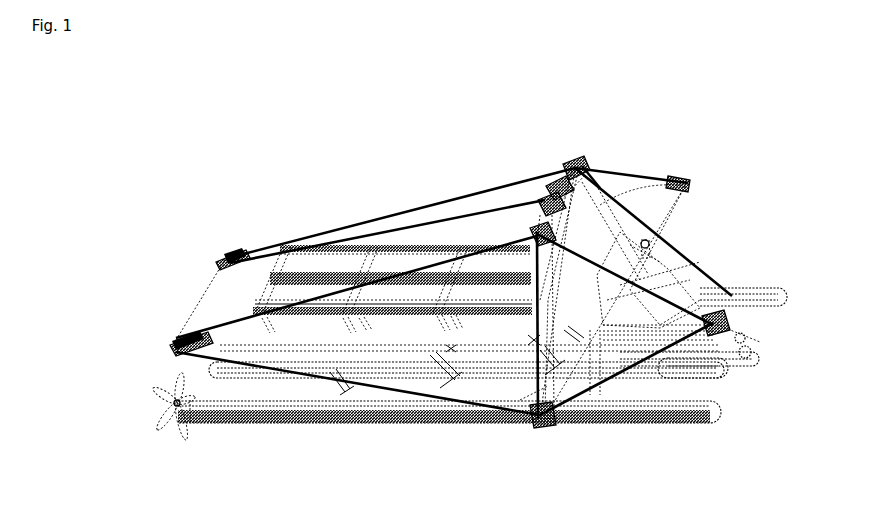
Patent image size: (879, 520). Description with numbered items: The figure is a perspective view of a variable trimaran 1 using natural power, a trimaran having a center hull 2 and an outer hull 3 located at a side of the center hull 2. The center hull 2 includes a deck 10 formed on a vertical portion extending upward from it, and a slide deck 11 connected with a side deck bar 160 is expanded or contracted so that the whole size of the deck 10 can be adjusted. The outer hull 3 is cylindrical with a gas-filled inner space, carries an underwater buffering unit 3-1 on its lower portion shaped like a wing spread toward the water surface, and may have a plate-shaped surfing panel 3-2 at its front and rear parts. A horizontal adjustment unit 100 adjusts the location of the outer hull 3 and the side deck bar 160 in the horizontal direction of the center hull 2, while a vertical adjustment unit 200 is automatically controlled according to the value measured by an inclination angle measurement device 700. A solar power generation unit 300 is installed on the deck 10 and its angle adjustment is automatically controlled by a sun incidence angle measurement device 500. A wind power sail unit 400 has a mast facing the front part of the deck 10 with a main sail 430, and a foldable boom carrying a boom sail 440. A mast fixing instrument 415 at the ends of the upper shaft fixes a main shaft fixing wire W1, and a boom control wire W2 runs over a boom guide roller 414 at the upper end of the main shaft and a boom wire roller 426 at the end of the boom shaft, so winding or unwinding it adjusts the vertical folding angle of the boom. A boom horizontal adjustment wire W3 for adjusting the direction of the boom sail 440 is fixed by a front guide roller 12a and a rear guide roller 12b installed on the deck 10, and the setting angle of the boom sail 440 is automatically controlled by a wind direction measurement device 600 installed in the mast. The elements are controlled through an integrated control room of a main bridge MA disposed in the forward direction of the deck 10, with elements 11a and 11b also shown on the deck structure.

The variable trimaran 1 is at (229, 97).
The deck 10 is at (200, 287).
The slide deck 11 is at (400, 405).
The right upper arm 11a is at (752, 333).
The left upper arm 11b is at (190, 338).
The front guide roller 12a is at (758, 359).
The rear guide roller 12b is at (170, 350).
The center hull 2 is at (748, 380).
The outer hull 3 is at (780, 284).
The underwater buffering unit 3-1 is at (312, 422).
The surfing panel 3-2 is at (730, 380).
The horizontal adjustment unit 100 is at (282, 400).
The side deck bar 160 is at (229, 424).
The vertical adjustment unit 200 is at (357, 400).
The solar power generation unit 300 is at (445, 224).
The wind power sail unit 400 is at (680, 166).
The boom guide roller 414 is at (577, 160).
The mast fixing instrument 415 is at (565, 168).
The boom wire roller 426 is at (544, 428).
The main sail 430 is at (620, 168).
The boom sail 440 is at (670, 175).
The sun incidence angle measurement device 500 is at (680, 230).
The wind direction measurement device 600 is at (535, 184).
The inclination angle measurement device 700 is at (462, 405).
The main bridge MA is at (716, 288).
The main shaft fixing wire W1 is at (302, 240).
The boom control wire W2 is at (530, 425).
The boom horizontal adjustment wire W3 is at (610, 412).